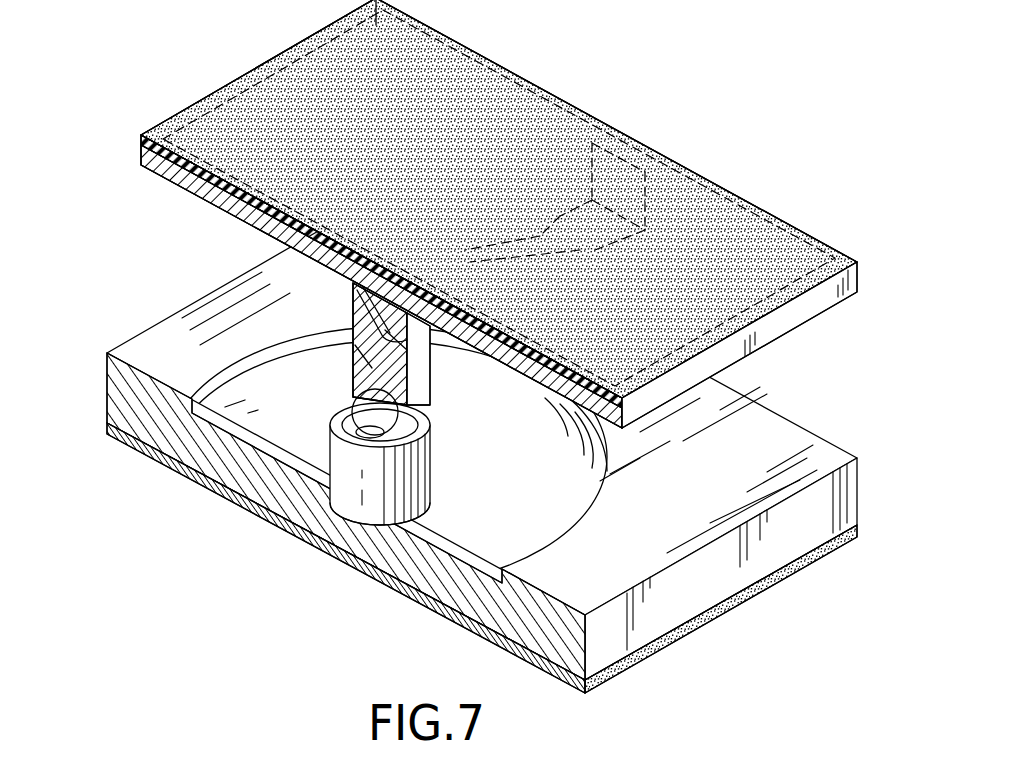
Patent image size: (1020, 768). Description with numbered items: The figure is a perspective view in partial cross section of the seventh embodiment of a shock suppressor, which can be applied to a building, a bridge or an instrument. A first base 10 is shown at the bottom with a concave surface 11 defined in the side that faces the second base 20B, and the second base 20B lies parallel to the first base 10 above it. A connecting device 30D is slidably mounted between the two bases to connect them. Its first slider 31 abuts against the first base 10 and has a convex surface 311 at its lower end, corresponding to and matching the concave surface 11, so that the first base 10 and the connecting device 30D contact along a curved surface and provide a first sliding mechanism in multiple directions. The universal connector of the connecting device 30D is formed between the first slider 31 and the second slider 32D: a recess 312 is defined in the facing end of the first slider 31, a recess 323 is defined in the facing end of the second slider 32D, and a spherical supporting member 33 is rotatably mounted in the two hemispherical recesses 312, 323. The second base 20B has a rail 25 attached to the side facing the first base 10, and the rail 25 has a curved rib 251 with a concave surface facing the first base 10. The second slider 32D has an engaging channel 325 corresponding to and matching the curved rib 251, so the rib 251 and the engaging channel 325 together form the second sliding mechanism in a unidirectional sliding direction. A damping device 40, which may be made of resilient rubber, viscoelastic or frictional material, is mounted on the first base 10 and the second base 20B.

The first base 10 is at (446, 438).
The concave surface 11 is at (567, 515).
The second base 20B is at (140, 153).
The rail 25 is at (382, 337).
The curved rib 251 is at (383, 318).
The connecting device 30D is at (371, 476).
The first slider 31 is at (386, 480).
The convex surface 311 is at (413, 522).
The recess 312 is at (367, 430).
The second slider 32D is at (368, 362).
The recess 323 is at (403, 422).
The engaging channel 325 is at (393, 335).
The supporting member 33 is at (370, 415).
The damping device 40 is at (222, 82).